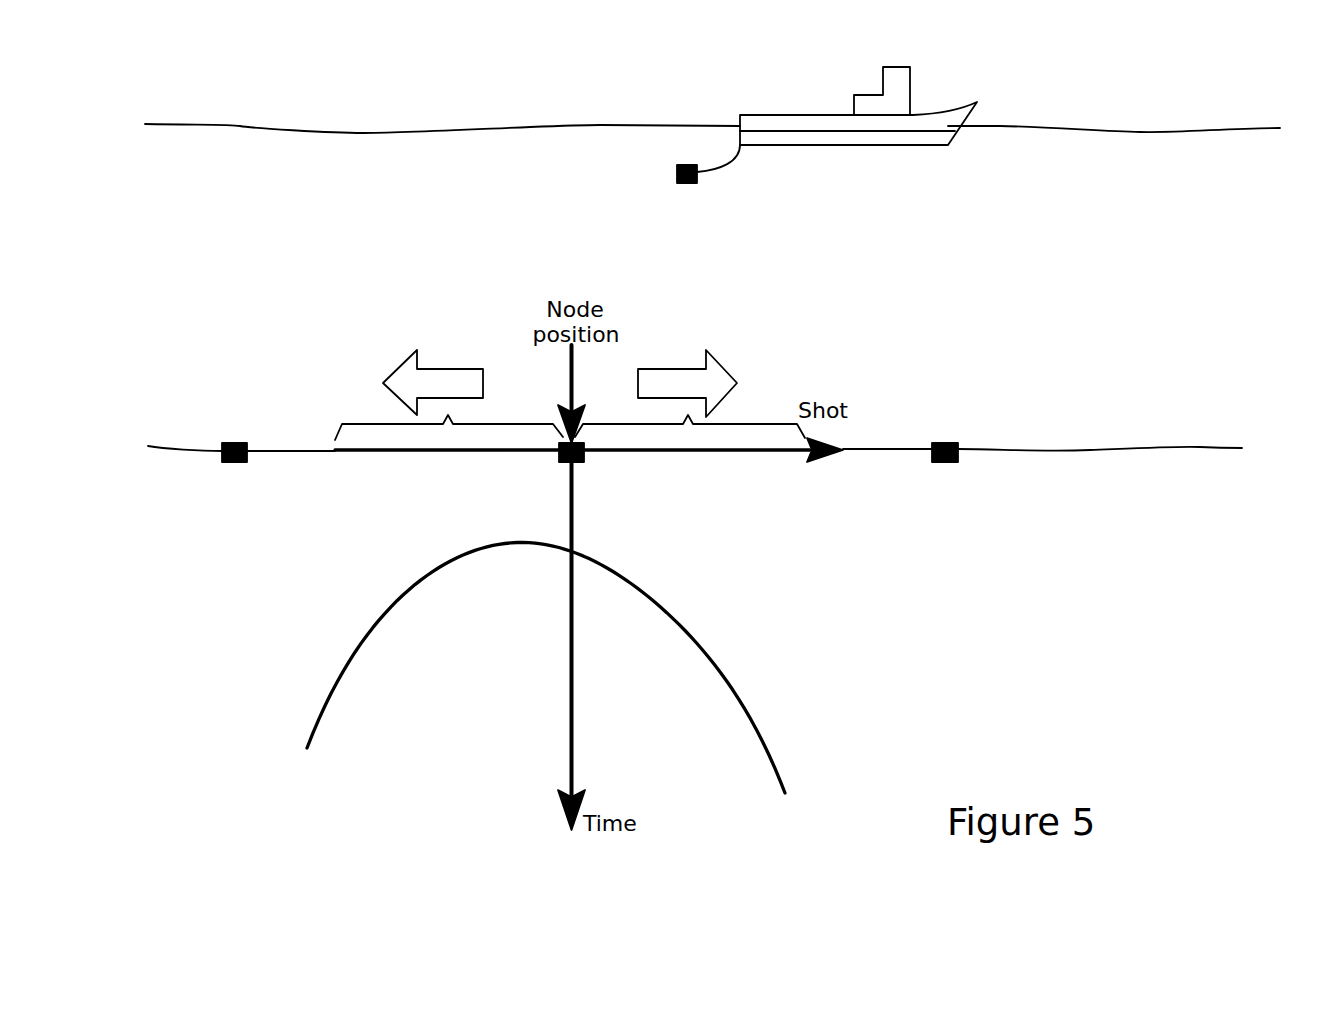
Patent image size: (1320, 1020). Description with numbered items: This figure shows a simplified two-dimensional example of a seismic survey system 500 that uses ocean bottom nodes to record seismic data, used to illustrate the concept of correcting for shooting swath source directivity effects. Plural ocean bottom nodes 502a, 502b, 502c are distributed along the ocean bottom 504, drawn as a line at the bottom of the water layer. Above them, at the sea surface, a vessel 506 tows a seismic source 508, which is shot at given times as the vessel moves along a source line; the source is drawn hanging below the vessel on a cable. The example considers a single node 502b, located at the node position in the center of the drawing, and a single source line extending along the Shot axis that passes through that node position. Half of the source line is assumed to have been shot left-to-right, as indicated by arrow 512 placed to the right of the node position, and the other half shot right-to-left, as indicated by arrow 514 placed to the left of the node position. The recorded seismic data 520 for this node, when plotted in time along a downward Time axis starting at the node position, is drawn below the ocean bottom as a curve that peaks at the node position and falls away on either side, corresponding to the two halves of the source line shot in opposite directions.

The seismic survey system 500 is at (598, 88).
The ocean bottom node 502a is at (235, 462).
The ocean bottom node 502b is at (584, 459).
The ocean bottom node 502c is at (944, 462).
The ocean bottom 504 is at (1040, 447).
The vessel 506 is at (948, 105).
The seismic source 508 is at (683, 183).
The arrow 512 is at (678, 368).
The arrow 514 is at (457, 368).
The recorded seismic data 520 is at (693, 638).